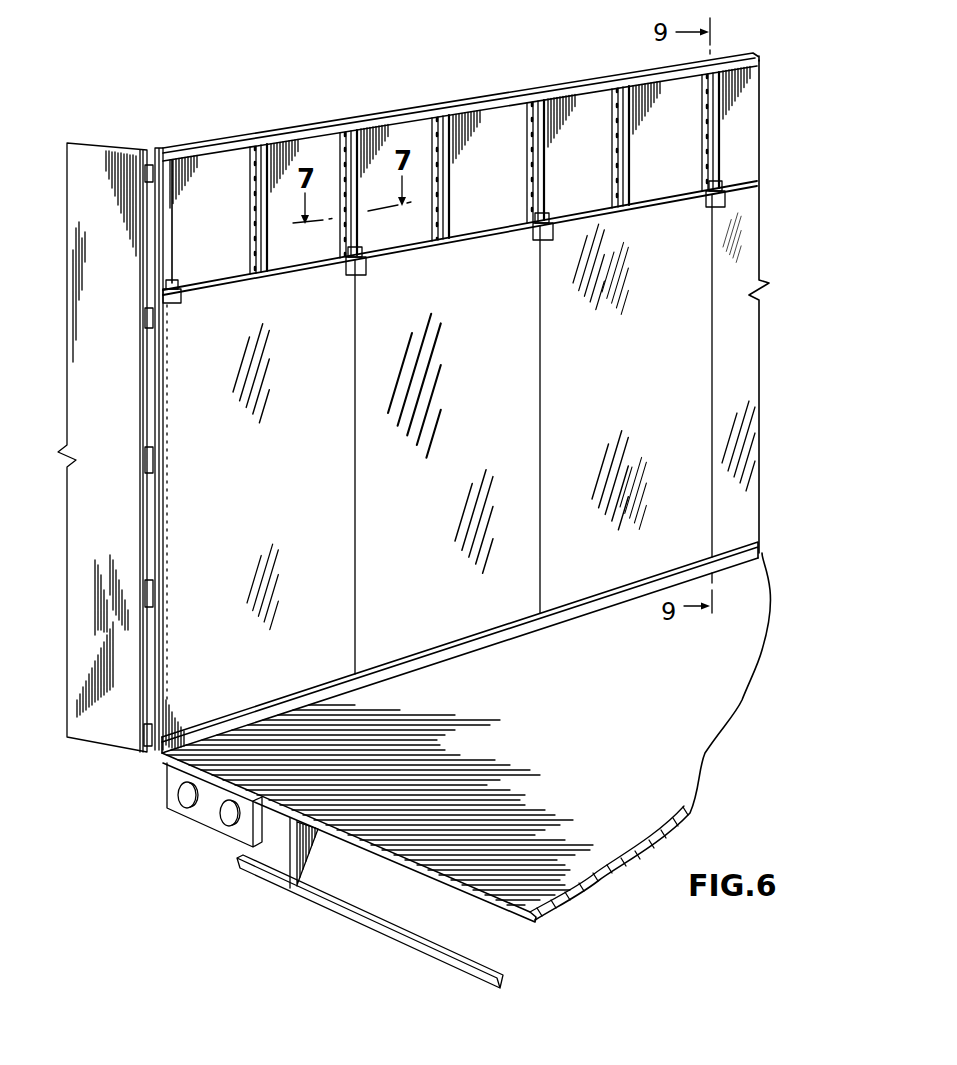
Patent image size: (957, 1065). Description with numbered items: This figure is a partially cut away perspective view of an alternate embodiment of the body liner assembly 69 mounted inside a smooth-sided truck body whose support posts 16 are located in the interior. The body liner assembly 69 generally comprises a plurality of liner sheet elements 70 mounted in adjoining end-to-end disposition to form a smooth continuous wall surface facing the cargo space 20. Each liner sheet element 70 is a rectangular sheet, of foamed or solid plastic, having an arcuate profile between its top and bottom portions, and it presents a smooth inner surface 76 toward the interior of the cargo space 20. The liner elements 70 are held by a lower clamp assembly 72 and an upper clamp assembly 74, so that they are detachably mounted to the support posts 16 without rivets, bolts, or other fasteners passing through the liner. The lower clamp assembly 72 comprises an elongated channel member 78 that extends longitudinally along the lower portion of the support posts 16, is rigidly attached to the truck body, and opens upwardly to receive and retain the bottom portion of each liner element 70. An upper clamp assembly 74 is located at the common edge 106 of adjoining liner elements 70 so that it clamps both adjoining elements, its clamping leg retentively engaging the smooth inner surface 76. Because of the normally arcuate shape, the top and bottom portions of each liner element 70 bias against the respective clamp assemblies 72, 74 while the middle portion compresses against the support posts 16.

The support posts 16 is at (262, 160).
The cargo space 20 is at (642, 751).
The body liner assembly 69 is at (768, 233).
The liner sheet element 70 is at (224, 303).
The lower clamp assembly 72 is at (587, 618).
The upper clamp assembly 74 is at (370, 251).
The smooth inner surface 76 is at (272, 477).
The channel member 78 is at (510, 633).
The common edge 106 is at (357, 332).